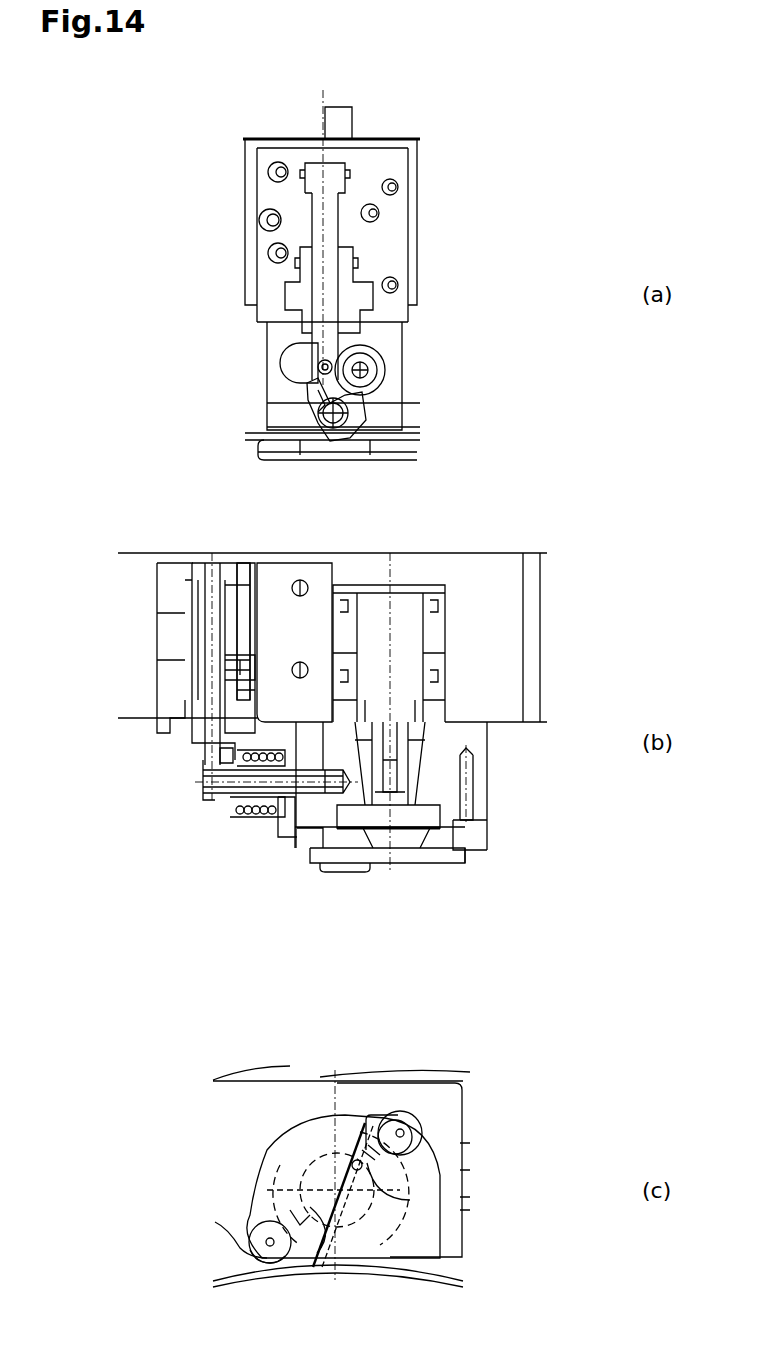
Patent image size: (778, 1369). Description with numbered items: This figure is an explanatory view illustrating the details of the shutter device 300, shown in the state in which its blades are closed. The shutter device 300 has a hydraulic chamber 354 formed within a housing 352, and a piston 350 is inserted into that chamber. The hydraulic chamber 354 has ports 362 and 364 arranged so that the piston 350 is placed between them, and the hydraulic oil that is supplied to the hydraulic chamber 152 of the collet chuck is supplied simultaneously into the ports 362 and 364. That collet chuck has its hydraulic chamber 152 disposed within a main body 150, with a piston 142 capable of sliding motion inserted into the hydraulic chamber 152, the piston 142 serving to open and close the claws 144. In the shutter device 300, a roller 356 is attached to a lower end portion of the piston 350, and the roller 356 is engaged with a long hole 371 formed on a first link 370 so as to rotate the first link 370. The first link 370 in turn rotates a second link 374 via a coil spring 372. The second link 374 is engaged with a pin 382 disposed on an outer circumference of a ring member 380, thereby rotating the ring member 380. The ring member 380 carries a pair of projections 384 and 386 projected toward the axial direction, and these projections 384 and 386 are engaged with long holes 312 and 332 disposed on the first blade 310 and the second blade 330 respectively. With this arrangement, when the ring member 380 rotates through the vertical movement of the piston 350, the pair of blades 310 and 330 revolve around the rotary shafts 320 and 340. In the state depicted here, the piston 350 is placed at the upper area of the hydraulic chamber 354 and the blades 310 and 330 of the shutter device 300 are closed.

The piston 142 is at (397, 673).
The claws 144 is at (413, 798).
The main body 150 is at (470, 742).
The hydraulic chamber 152 is at (416, 590).
The shutter device 300 is at (318, 895).
The first blade 310 is at (427, 857).
The long hole 312 is at (318, 1258).
The rotary shaft 320 is at (337, 868).
The second blade 330 is at (377, 1207).
The long hole 332 is at (410, 1200).
The rotary shaft 340 is at (400, 1128).
The piston 350 is at (320, 178).
The housing 352 is at (373, 168).
The hydraulic chamber 354 is at (337, 167).
The roller 356 is at (307, 388).
The port 362 is at (242, 592).
The port 364 is at (243, 667).
The first link 370 is at (293, 372).
The long hole 371 is at (318, 364).
The coil spring 372 is at (268, 808).
The second link 374 is at (367, 410).
The ring member 380 is at (382, 418).
The pin 382 is at (320, 420).
The projection 384 is at (297, 1220).
The projection 386 is at (357, 1165).